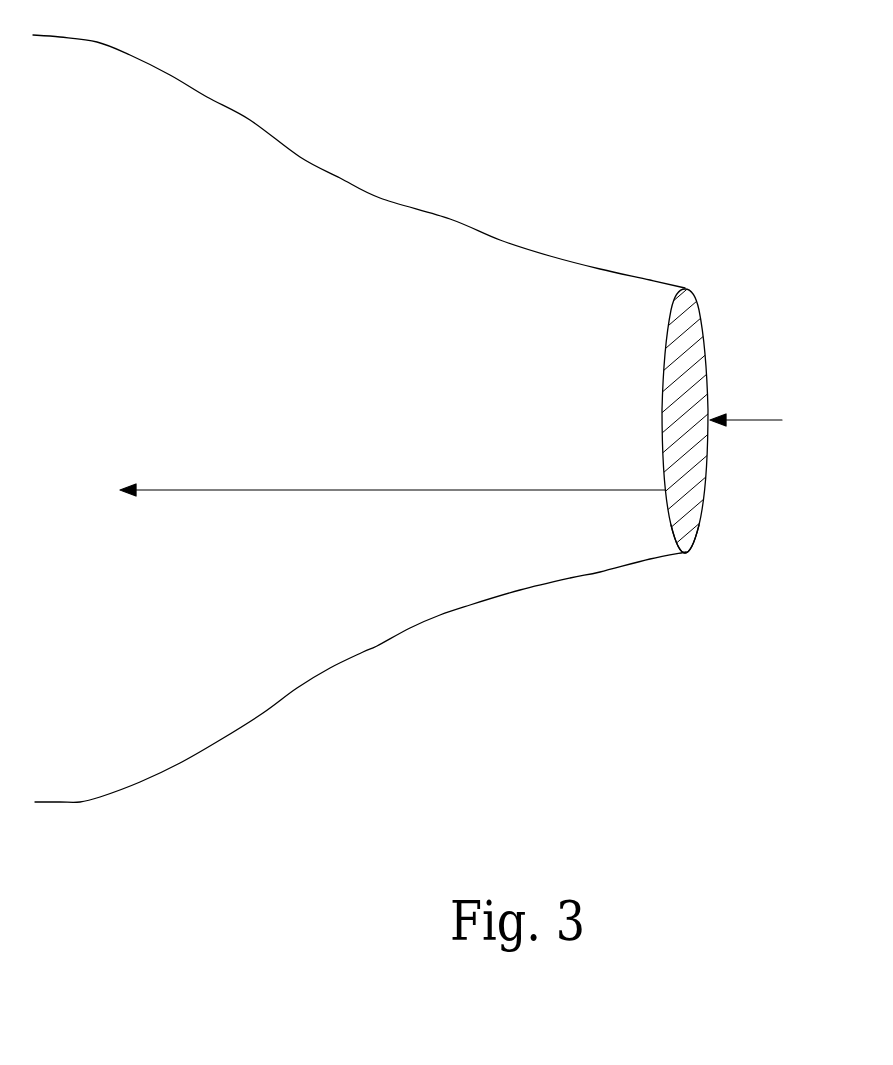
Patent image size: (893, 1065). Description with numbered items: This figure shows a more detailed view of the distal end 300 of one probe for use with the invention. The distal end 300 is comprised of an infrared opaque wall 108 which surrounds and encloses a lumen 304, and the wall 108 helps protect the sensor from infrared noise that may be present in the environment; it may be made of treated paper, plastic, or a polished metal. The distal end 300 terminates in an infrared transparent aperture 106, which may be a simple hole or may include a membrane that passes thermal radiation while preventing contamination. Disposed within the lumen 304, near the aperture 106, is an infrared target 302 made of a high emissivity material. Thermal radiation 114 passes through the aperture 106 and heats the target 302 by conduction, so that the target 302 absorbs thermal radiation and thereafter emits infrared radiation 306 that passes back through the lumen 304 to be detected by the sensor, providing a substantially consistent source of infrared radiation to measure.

The distal end 300 is at (384, 468).
The lumen 304 is at (210, 247).
The infrared opaque wall 108 is at (377, 647).
The infrared transparent aperture 106 is at (685, 288).
The infrared target 302 is at (688, 554).
The infrared radiation 306 is at (276, 490).
The thermal radiation 114 is at (746, 413).